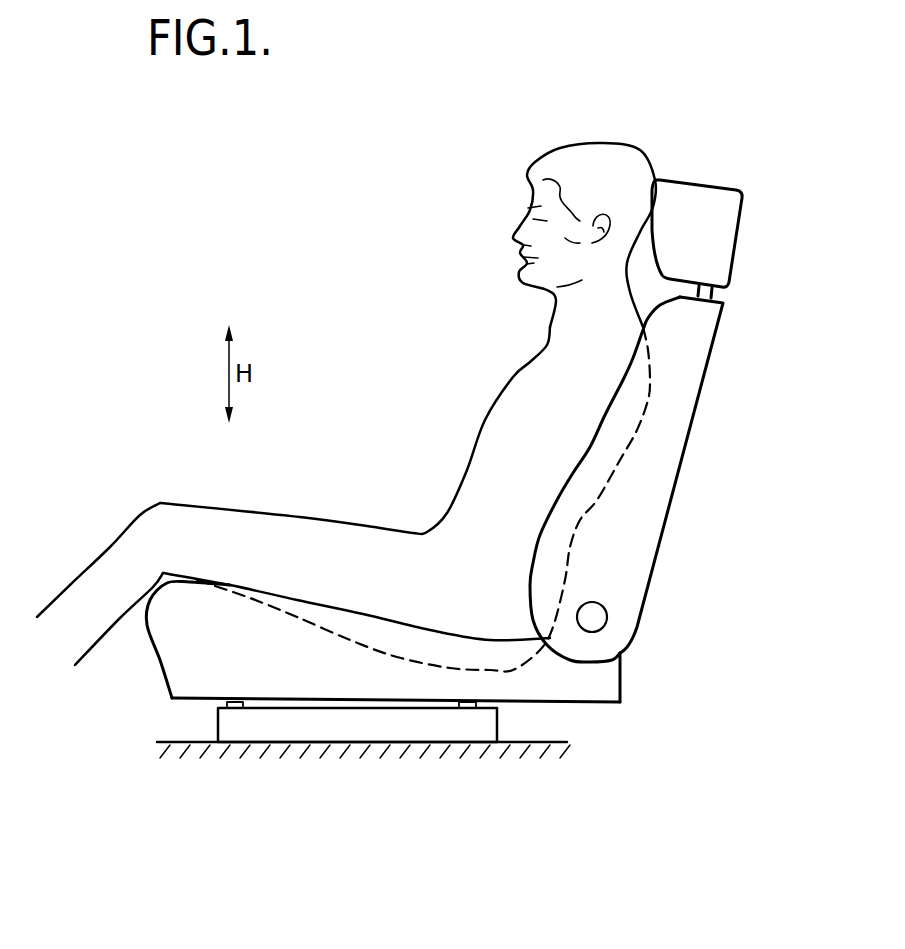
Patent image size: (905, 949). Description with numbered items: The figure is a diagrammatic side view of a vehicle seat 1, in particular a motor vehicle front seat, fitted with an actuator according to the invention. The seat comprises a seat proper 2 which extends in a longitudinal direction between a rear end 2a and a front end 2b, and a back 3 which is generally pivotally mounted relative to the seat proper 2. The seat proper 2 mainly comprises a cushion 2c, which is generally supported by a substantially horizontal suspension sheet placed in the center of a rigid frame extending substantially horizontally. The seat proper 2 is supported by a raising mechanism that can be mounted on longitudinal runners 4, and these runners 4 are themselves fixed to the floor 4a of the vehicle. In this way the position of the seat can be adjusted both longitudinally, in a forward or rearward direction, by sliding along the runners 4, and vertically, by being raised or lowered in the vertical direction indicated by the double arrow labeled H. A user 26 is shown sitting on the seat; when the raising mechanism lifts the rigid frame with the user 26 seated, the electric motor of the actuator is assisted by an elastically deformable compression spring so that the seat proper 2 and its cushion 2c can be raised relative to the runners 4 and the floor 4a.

The vehicle seat 1 is at (398, 505).
The seat proper 2 is at (366, 705).
The rear end 2a is at (602, 702).
The front end 2b is at (155, 657).
The cushion 2c is at (268, 667).
The back 3 is at (680, 405).
The longitudinal runners 4 is at (393, 766).
The floor 4a is at (543, 742).
The user 26 is at (527, 410).